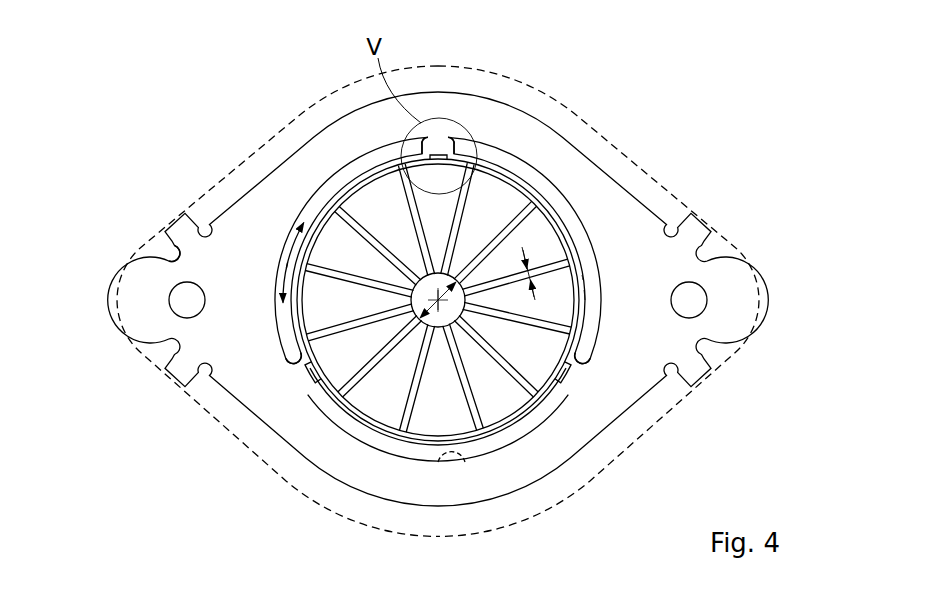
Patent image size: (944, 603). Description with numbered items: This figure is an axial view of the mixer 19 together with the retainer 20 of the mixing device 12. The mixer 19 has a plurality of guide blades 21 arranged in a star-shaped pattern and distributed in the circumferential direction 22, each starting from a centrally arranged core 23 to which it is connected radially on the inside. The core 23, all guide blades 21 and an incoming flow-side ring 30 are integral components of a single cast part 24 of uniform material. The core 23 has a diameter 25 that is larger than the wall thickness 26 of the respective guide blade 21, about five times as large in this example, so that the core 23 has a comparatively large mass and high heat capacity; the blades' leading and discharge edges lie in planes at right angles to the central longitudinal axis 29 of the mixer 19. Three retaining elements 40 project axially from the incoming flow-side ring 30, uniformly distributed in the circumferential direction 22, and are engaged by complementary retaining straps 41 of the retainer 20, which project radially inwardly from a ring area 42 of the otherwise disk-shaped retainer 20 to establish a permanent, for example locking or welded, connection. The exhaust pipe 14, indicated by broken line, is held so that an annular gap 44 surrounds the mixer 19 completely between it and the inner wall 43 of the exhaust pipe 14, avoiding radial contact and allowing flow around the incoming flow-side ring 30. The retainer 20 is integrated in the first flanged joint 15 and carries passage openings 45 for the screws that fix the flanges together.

The mixing device 12 is at (749, 171).
The exhaust pipe 14 is at (167, 249).
The first flanged joint 15 is at (241, 162).
The mixer 19 is at (532, 171).
The retainer 20 is at (620, 170).
The guide blades 21 is at (450, 418).
The circumferential direction 22 is at (278, 262).
The core 23 is at (463, 314).
The cast part 24 is at (588, 314).
The diameter 25 is at (437, 274).
The wall thickness 26 is at (545, 258).
The central longitudinal axis 29 is at (453, 328).
The incoming flow-side ring 30 is at (586, 284).
The retaining elements 40 is at (436, 150).
The retaining straps 41 is at (457, 141).
The ring area 42 is at (352, 472).
The inner wall 43 is at (467, 466).
The annular gap 44 is at (340, 418).
The passage openings 45 is at (183, 299).